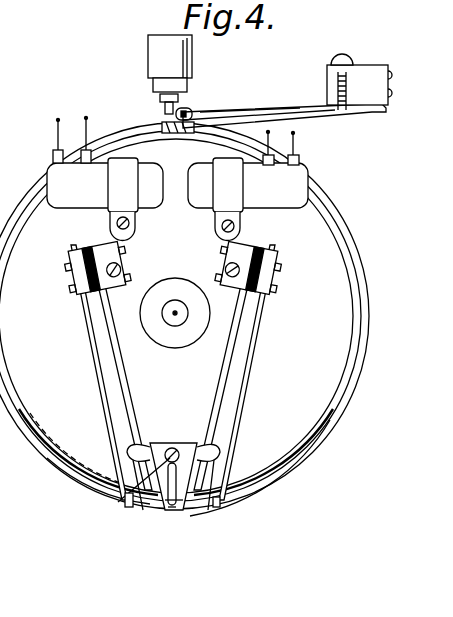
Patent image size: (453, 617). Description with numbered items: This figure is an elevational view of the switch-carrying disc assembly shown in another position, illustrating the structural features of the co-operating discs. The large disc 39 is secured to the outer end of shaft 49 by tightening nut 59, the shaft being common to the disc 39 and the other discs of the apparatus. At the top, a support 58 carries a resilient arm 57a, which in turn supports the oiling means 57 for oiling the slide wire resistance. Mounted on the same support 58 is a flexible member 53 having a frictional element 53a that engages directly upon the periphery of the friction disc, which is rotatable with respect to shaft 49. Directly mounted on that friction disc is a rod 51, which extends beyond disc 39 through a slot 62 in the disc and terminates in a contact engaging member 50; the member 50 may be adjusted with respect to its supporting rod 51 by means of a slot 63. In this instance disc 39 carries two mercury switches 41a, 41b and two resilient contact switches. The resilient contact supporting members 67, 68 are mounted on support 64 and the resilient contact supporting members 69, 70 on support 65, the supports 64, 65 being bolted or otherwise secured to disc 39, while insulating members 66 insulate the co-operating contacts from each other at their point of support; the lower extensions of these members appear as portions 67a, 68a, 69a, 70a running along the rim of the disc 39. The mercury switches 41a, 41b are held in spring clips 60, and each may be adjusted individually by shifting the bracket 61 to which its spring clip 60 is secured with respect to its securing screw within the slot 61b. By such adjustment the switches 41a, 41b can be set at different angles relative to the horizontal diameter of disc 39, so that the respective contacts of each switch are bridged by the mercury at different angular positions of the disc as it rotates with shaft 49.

The disc 39 is at (315, 402).
The mercury switch 41a is at (60, 180).
The mercury switch 41b is at (290, 187).
The shaft 49 is at (175, 312).
The contact engaging member 50 is at (163, 513).
The rod 51 is at (131, 504).
The flexible member 53 is at (315, 120).
The frictional element 53a is at (163, 117).
The oiling means 57 is at (158, 50).
The resilient arm 57a is at (258, 113).
The support 58 is at (368, 78).
The nut 59 is at (175, 348).
The spring clips 60 is at (228, 190).
The brackets 61 is at (220, 229).
The slot 61b is at (117, 225).
The slot 62 is at (143, 447).
The slot 63 is at (175, 510).
The support 64 is at (110, 248).
The support 65 is at (240, 258).
The insulating members 66 is at (262, 287).
The resilient contact supporting member 67 is at (95, 363).
The left outer bar extension 67a is at (130, 508).
The resilient contact supporting member 68 is at (112, 348).
The left inner bar extension 68a is at (163, 490).
The resilient contact supporting member 69 is at (234, 378).
The right inner bar extension 69a is at (283, 473).
The resilient contact supporting member 70 is at (255, 383).
The right outer bar extension 70a is at (278, 495).